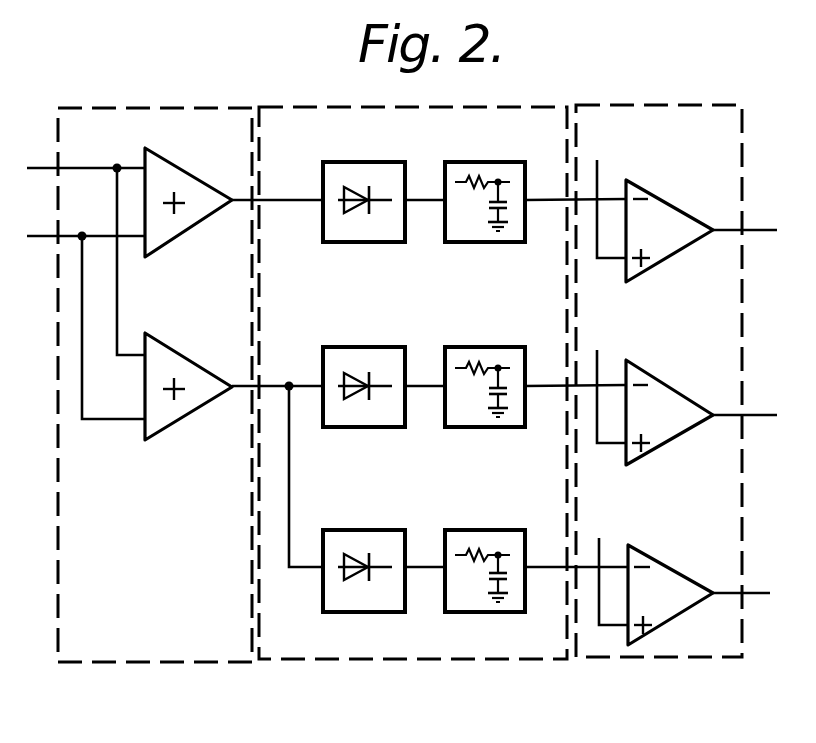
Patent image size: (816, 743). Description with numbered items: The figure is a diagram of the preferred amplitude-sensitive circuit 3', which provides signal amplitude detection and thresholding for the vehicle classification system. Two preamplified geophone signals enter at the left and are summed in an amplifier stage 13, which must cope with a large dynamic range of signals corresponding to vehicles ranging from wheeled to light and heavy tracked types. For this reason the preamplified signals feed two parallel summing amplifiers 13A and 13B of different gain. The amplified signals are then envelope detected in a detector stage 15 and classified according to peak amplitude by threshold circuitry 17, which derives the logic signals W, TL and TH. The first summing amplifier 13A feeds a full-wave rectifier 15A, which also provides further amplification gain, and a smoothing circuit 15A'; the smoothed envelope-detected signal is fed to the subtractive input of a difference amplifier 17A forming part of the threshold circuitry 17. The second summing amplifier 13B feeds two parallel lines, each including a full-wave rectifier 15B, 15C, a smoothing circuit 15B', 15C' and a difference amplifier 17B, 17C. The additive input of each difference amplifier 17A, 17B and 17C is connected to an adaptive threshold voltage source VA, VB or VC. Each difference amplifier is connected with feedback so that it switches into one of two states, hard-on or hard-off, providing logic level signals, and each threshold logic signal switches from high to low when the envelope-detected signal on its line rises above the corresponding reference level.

The amplitude-sensitive circuit 3' is at (142, 86).
The amplifier stage 13 is at (163, 650).
The first summing amplifier 13A is at (190, 173).
The second summing amplifier 13B is at (186, 355).
The detector stage 15 is at (430, 648).
The full-wave rectifier 15A is at (364, 182).
The smoothing circuit 15A' is at (485, 182).
The full-wave rectifier 15B is at (364, 360).
The smoothing circuit 15B' is at (485, 360).
The full-wave rectifier 15C is at (364, 545).
The smoothing circuit 15C' is at (485, 545).
The threshold circuitry 17 is at (690, 646).
The difference amplifier 17A is at (676, 207).
The difference amplifier 17B is at (668, 380).
The difference amplifier 17C is at (674, 567).